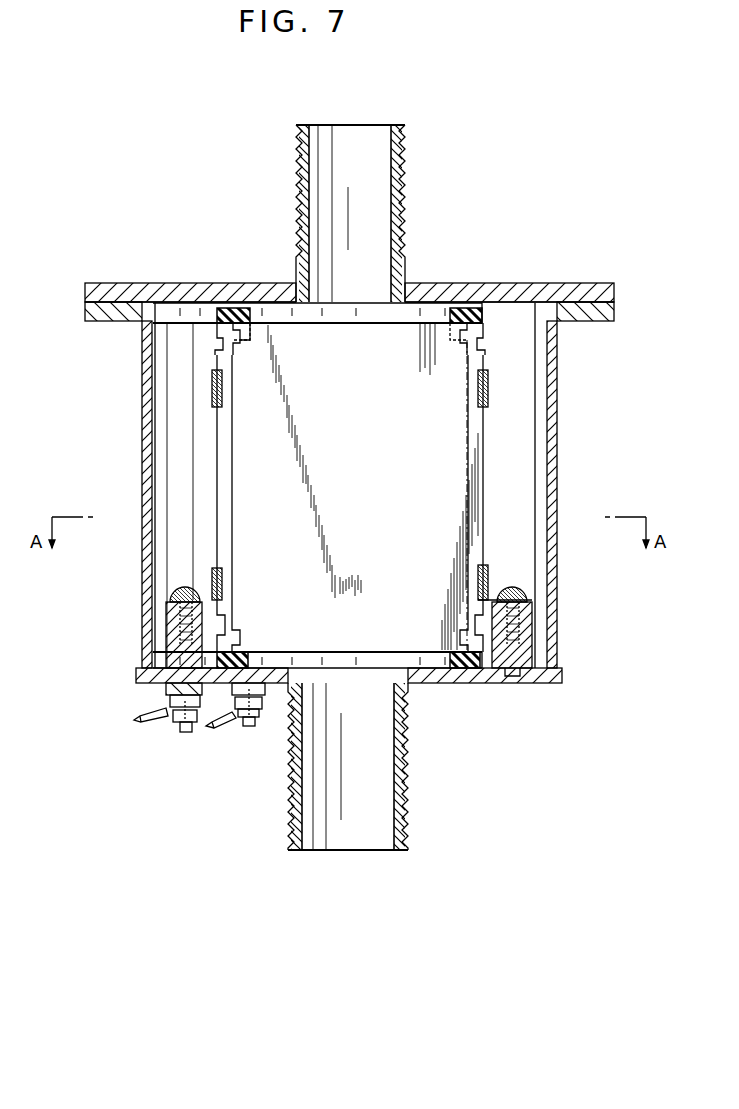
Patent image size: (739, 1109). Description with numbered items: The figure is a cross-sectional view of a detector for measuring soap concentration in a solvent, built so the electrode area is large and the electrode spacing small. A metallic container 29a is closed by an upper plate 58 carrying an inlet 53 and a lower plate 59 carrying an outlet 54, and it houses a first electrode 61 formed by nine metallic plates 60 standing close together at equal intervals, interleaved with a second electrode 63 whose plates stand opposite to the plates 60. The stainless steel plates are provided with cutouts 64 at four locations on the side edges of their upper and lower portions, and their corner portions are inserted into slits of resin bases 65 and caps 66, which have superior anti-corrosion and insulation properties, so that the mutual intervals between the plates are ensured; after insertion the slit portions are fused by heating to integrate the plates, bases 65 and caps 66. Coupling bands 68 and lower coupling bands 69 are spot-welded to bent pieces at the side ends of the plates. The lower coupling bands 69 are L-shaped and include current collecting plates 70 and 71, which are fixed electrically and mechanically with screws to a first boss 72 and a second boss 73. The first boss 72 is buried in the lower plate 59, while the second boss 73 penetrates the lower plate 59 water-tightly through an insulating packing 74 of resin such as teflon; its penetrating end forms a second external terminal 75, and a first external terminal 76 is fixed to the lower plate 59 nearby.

The inlet 53 is at (405, 160).
The outlet 54 is at (408, 803).
The upper plate 58 is at (452, 283).
The lower plate 59 is at (520, 683).
The metallic plates 60 is at (445, 458).
The first electrode 61 is at (483, 428).
The second electrode 63 is at (217, 440).
The cutouts 64 is at (240, 355).
The bases 65 is at (245, 660).
The caps 66 is at (232, 308).
The coupling bands 68 is at (212, 385).
The lower coupling bands 69 is at (216, 575).
The current collecting plate 70 is at (522, 590).
The current collecting plate 71 is at (178, 592).
The first boss 72 is at (525, 648).
The second boss 73 is at (170, 628).
The packing 74 is at (168, 690).
The second external terminal 75 is at (186, 732).
The first external terminal 76 is at (249, 728).
The metallic container 29a is at (557, 400).